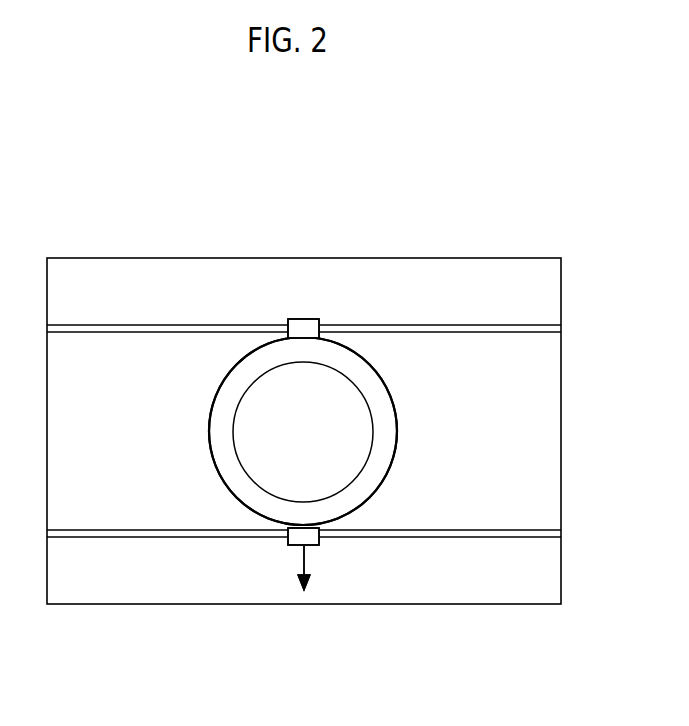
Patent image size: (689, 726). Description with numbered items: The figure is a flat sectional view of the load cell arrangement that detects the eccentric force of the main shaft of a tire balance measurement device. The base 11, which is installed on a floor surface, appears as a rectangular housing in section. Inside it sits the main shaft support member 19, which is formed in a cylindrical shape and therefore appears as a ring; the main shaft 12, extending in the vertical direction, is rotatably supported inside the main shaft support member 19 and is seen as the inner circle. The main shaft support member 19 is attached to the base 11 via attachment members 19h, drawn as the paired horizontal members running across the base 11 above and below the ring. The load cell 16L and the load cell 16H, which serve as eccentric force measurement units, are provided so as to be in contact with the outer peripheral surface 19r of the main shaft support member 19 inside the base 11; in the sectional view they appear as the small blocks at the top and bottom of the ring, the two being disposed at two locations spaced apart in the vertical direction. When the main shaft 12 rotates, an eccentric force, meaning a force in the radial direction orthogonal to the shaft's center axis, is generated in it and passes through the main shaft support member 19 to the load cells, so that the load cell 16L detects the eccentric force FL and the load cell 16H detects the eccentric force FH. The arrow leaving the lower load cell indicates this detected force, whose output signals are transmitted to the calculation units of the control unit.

The base 11 is at (510, 258).
The main shaft 12 is at (372, 416).
The main shaft support member 19 is at (210, 410).
The outer peripheral surface 19r is at (395, 465).
The attachment members 19h is at (178, 325).
The load cell 16L is at (308, 547).
The load cell 16H is at (308, 547).
The eccentric force FL is at (298, 562).
The eccentric force FH is at (298, 562).